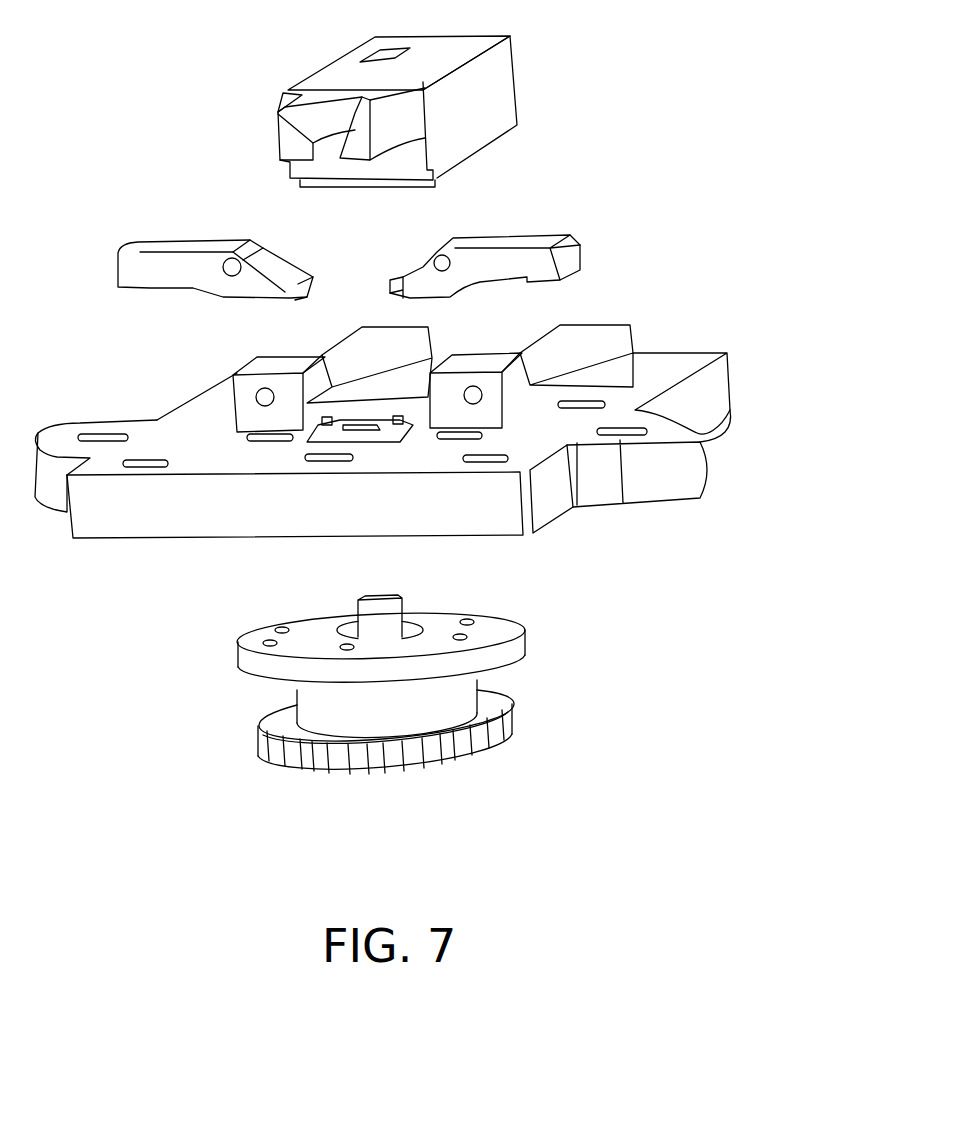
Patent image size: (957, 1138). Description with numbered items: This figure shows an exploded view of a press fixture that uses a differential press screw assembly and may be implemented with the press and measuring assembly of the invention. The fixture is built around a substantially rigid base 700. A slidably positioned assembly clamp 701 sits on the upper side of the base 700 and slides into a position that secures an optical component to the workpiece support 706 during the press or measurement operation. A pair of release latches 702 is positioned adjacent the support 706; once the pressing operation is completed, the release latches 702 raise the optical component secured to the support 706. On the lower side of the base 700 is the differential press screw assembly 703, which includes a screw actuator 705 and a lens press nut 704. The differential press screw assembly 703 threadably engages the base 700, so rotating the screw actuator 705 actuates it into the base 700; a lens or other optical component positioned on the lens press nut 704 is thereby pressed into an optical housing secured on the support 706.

The base 700 is at (673, 470).
The assembly clamp 701 is at (490, 90).
The release latches 702 is at (160, 248).
The differential press screw assembly 703 is at (530, 634).
The lens press nut 704 is at (353, 607).
The screw actuator 705 is at (515, 723).
The workpiece support 706 is at (310, 437).